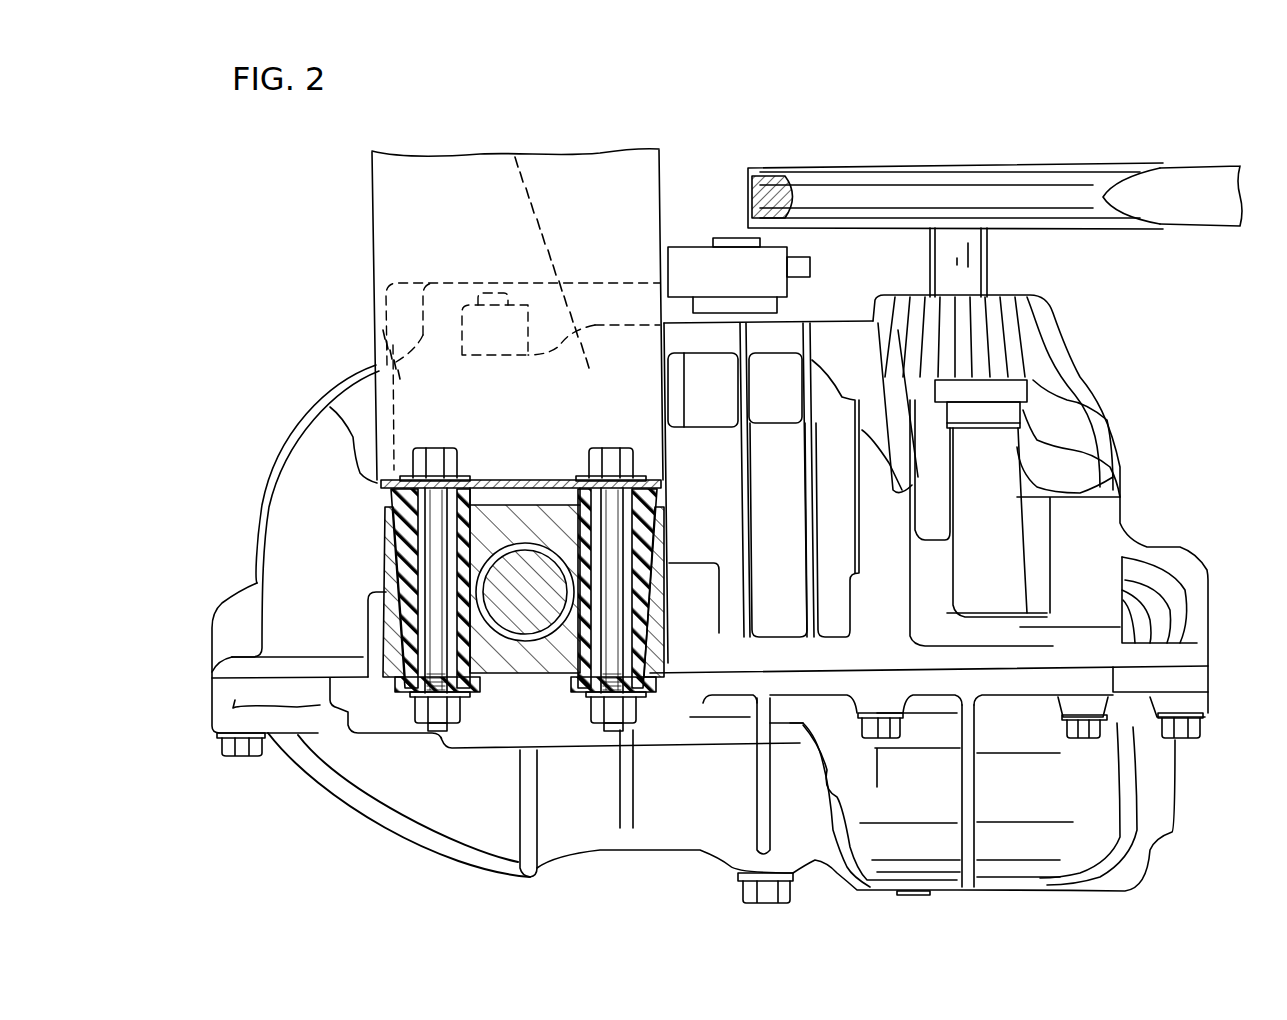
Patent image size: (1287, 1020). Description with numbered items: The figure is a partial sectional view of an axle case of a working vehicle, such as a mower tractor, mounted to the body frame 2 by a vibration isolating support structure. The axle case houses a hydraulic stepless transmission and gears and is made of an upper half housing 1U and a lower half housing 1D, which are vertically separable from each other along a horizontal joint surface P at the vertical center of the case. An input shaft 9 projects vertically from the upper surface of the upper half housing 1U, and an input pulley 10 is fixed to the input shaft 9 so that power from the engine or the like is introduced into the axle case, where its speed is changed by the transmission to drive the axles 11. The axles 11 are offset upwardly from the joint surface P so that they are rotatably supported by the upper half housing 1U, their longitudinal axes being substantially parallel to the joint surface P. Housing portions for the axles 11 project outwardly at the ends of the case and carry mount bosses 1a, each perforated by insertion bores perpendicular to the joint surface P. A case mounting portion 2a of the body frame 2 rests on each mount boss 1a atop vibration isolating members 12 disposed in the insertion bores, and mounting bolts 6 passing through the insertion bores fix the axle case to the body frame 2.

The body frame 2 is at (372, 213).
The case mounting portion 2a is at (330, 407).
The mount boss 1a is at (385, 570).
The vibration isolating member 12 is at (384, 493).
The mounting bolt 6 is at (460, 452).
The axle 11 is at (522, 612).
The input pulley 10 is at (1023, 162).
The input shaft 9 is at (970, 263).
The upper half housing 1U is at (1210, 583).
The lower half housing 1D is at (1177, 787).
The joint surface P is at (232, 658).